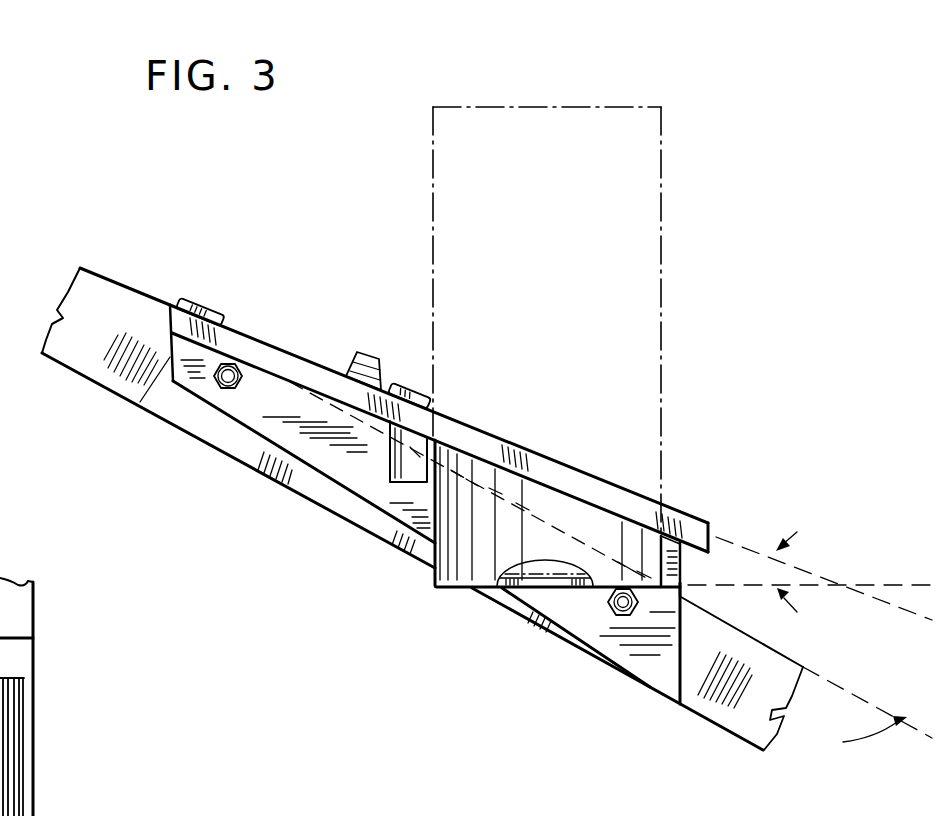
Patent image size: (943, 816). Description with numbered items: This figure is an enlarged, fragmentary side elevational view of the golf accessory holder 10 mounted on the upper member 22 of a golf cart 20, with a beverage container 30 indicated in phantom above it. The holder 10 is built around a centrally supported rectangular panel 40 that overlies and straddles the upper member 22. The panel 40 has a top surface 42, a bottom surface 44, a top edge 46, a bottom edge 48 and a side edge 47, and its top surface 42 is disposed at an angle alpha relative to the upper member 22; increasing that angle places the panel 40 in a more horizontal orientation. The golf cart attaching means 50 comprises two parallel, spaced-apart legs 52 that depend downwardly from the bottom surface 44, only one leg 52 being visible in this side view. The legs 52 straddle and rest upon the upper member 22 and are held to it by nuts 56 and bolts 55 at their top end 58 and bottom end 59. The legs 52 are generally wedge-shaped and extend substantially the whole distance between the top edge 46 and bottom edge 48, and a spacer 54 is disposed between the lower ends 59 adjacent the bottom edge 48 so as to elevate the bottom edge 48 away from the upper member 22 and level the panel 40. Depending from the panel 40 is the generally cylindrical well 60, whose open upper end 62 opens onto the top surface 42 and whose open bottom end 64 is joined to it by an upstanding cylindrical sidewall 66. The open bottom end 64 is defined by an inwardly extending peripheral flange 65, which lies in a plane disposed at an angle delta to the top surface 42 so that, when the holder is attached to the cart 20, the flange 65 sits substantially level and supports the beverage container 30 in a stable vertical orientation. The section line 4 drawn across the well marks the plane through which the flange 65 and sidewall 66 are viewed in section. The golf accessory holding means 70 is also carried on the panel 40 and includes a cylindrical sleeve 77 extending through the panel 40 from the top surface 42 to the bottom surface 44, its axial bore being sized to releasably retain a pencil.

The section line 4- 4 is at (455, 227).
The golf accessory holder 10 is at (238, 270).
The golf cart 20 is at (87, 260).
The upper member 22 is at (67, 368).
The beverage container 30 is at (563, 105).
The panel 40 is at (261, 340).
The top surface 42 is at (681, 514).
The bottom surface 44 is at (695, 554).
The top edge 46 is at (170, 308).
The side edge 47 is at (305, 381).
The bottom edge 48 is at (718, 538).
The golf cart attaching means 50 is at (299, 466).
The legs 52 is at (252, 433).
The spacer 54 is at (683, 568).
The bolts 55 is at (230, 392).
The nuts 56 is at (213, 388).
The top end 58 is at (138, 403).
The bottom end 59 is at (681, 672).
The well 60 is at (574, 591).
The open upper end 62 is at (430, 481).
The open bottom end 64 is at (458, 589).
The flange 65 is at (521, 589).
The cylindrical sidewall 66 is at (555, 555).
The golf accessory holding means 70 is at (350, 347).
The cylindrical sleeve 77 is at (387, 458).